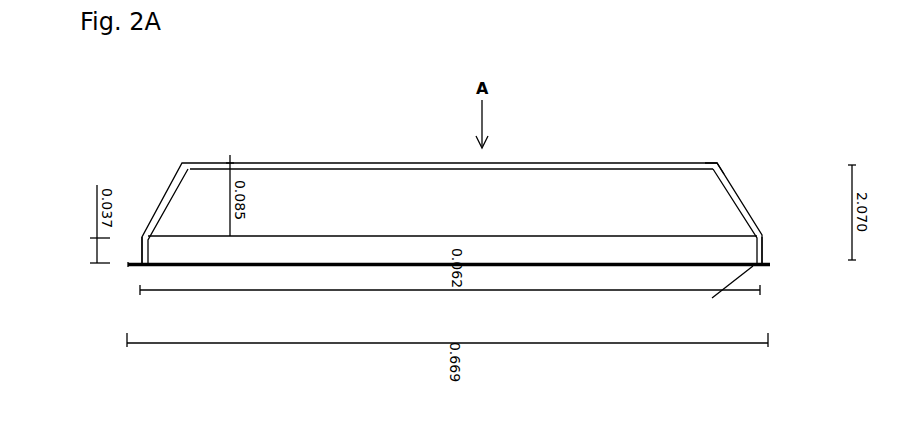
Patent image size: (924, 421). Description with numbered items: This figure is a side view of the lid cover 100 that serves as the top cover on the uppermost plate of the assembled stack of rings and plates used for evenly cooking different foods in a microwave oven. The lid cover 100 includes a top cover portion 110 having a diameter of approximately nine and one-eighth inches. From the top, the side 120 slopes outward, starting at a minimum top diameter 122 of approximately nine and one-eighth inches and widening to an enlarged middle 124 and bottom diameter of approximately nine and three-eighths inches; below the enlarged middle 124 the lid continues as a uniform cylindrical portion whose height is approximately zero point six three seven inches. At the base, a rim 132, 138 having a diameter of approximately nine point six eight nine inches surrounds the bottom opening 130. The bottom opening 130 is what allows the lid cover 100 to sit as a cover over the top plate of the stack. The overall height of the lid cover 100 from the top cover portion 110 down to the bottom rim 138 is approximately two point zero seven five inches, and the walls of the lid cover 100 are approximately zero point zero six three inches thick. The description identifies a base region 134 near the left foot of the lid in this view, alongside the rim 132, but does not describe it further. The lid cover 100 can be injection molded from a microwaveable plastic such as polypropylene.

The lid cover 100 is at (349, 148).
The top cover portion 110 is at (571, 163).
The side 120 is at (735, 190).
The minimum top diameter 122 is at (716, 161).
The enlarged middle 124 is at (452, 208).
The bottom opening 130 is at (272, 268).
The rim 132 is at (128, 266).
The left side wall foot 134 is at (142, 267).
The bottom rim 138 is at (768, 266).